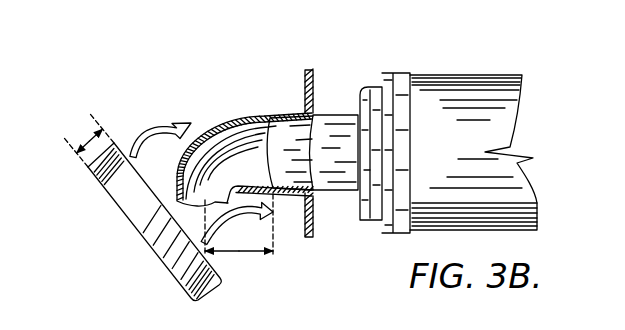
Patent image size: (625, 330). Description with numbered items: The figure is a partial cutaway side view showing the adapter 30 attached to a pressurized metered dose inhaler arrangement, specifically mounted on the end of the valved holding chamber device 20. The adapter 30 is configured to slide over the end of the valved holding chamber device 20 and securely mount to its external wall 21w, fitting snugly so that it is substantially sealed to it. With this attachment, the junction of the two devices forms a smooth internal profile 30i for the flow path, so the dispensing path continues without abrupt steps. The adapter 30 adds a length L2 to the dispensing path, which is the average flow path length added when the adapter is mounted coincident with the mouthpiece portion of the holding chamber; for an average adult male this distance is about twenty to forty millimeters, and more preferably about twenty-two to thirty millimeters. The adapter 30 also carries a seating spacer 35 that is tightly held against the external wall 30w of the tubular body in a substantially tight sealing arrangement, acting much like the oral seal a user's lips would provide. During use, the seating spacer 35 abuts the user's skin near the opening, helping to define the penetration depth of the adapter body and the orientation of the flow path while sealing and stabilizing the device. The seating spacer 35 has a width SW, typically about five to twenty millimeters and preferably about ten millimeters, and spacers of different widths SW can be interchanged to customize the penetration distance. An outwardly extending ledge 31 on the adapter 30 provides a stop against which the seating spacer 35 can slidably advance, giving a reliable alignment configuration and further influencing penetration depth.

The valved holding chamber device 20 is at (470, 75).
The external wall 21w is at (307, 197).
The adapter 30 is at (221, 109).
The internal profile 30i is at (208, 133).
The external wall of the tubular body 30w is at (279, 113).
The ledge 31 is at (313, 91).
The seating spacer 35 is at (103, 188).
The seating spacer width SW is at (90, 142).
The flow path length L2 is at (243, 254).